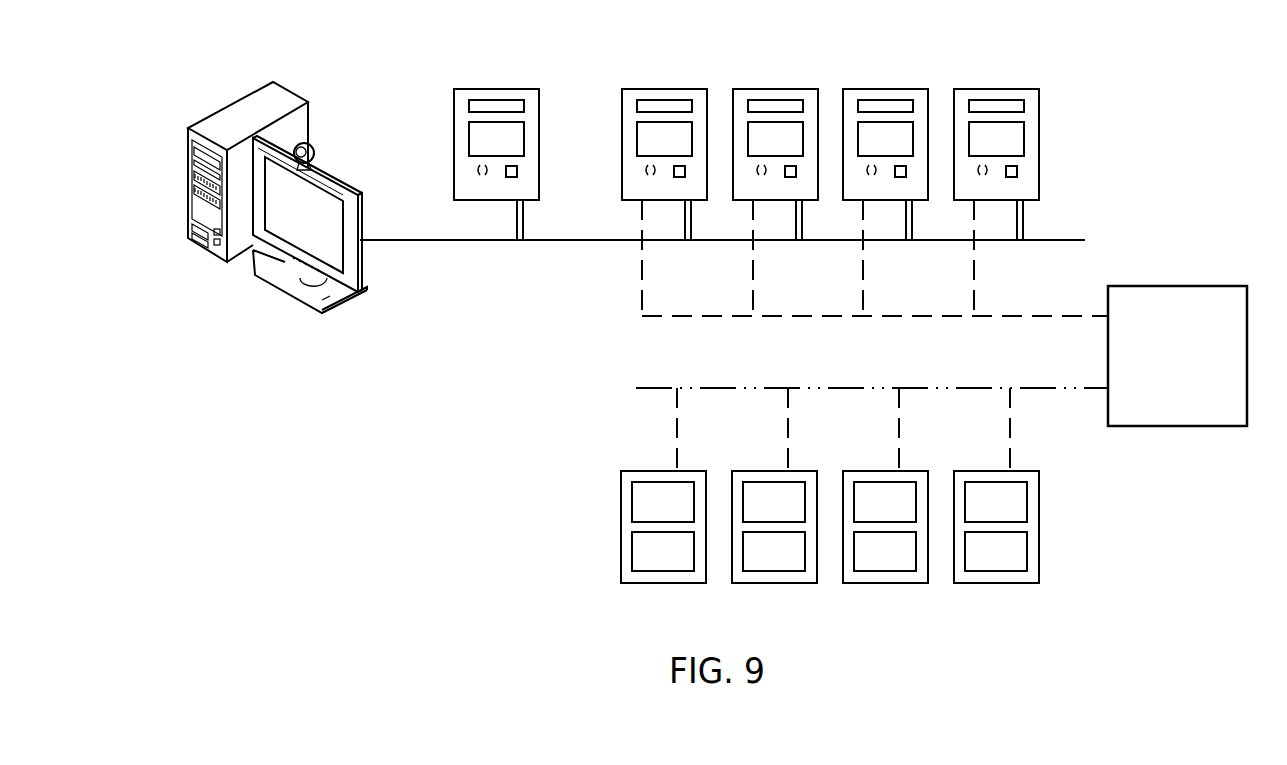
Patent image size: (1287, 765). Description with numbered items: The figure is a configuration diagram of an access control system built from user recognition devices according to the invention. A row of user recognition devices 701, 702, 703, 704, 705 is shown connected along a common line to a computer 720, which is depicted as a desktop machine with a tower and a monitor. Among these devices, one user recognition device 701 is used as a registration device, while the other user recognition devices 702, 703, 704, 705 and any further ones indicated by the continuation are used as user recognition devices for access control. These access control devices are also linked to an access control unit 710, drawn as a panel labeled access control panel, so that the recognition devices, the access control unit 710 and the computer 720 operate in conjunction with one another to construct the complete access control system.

The user recognition device 701 is at (496, 133).
The user recognition device 702 is at (664, 171).
The user recognition device 703 is at (775, 171).
The user recognition device 704 is at (885, 171).
The user recognition device 705 is at (996, 171).
The access control unit 710 is at (1177, 286).
The computer 720 is at (292, 90).